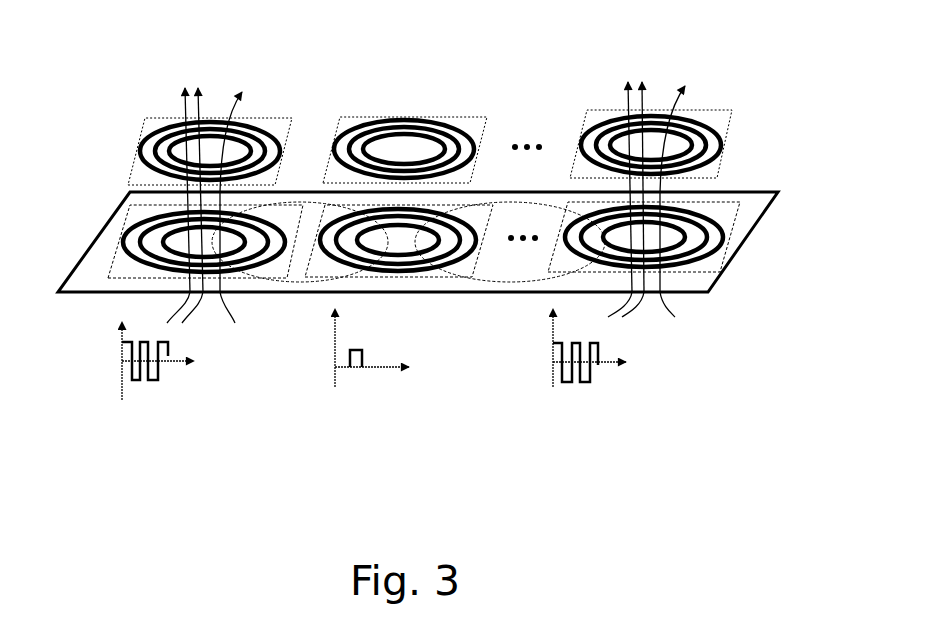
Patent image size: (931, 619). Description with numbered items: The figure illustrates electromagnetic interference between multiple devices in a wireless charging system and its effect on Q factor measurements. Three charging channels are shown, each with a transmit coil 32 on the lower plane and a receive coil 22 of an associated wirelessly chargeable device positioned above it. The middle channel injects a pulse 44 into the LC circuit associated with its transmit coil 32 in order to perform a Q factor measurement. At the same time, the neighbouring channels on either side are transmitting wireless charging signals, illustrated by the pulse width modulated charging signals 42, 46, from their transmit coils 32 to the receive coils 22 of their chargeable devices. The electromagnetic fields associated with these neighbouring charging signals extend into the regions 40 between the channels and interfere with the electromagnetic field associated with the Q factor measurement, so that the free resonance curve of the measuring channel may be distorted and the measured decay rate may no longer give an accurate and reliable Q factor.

The receive coil 22 is at (156, 124).
The transmit coil 32 is at (131, 225).
The region 40 is at (287, 296).
The pulse width modulated charging signal 42 is at (176, 384).
The pulse 44 is at (392, 390).
The pulse width modulated charging signal 46 is at (617, 385).